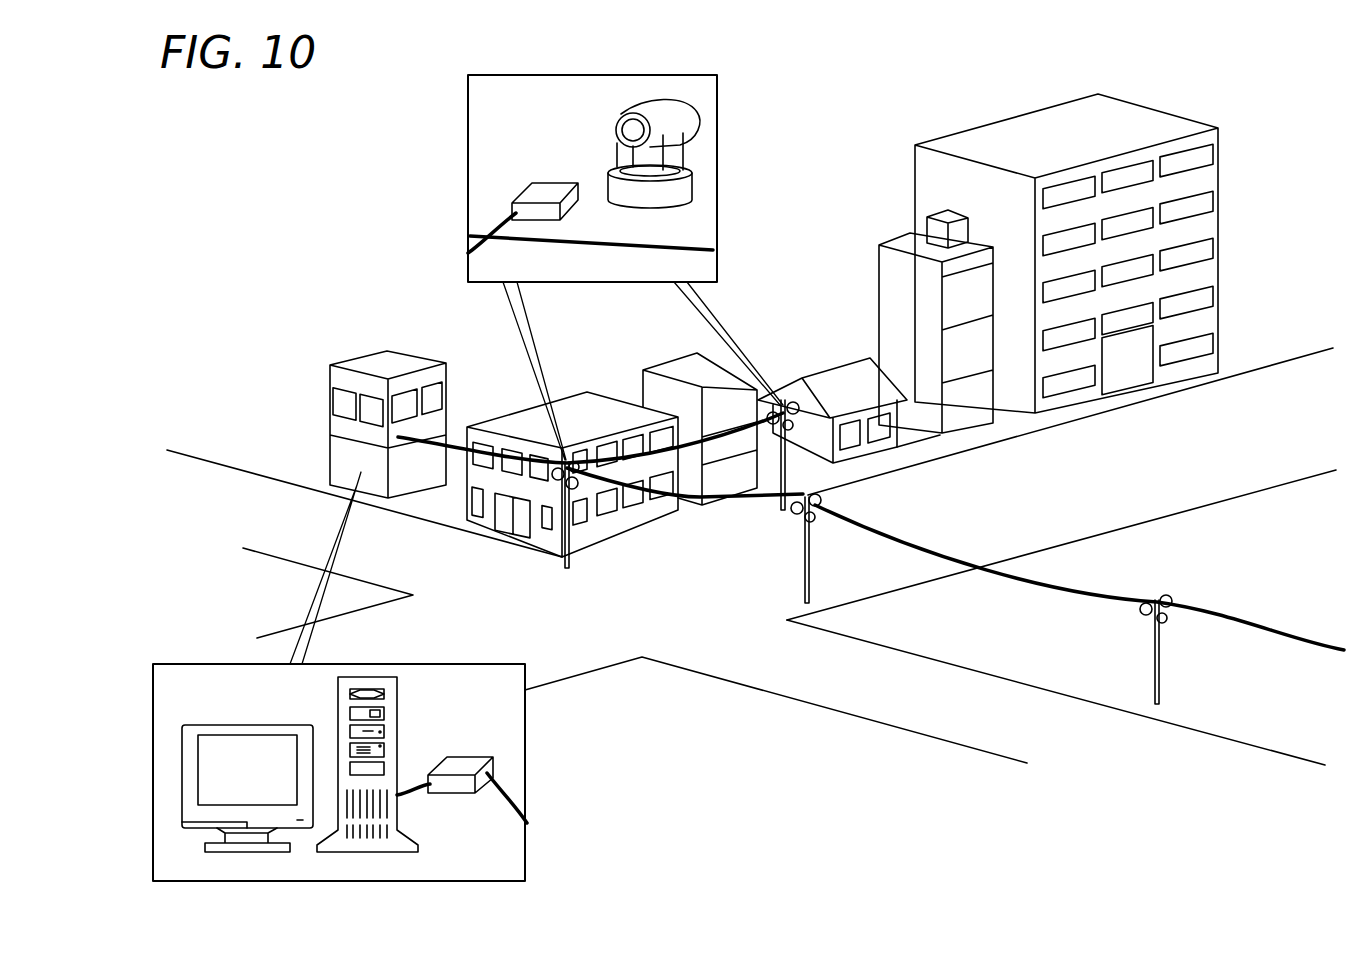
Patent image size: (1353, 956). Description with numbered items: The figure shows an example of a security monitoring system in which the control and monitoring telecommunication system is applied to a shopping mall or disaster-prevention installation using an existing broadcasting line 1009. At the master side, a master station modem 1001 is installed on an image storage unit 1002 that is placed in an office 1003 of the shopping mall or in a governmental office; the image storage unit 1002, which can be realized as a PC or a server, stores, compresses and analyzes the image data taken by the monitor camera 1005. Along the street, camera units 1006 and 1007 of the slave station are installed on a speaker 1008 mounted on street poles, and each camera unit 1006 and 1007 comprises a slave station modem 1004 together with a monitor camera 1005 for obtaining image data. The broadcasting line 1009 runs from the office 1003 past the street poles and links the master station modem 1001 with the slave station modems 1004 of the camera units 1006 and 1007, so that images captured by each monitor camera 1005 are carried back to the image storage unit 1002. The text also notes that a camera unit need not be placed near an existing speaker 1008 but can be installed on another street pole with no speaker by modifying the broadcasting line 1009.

The master station modem 1001 is at (480, 757).
The image storage unit 1002 is at (398, 817).
The office 1003 is at (328, 369).
The slave station modem 1004 is at (530, 188).
The monitor camera 1005 is at (693, 106).
The camera unit 1006 is at (582, 483).
The camera unit 1007 is at (790, 427).
The speaker 1008 is at (793, 410).
The broadcasting line 1009 is at (913, 548).